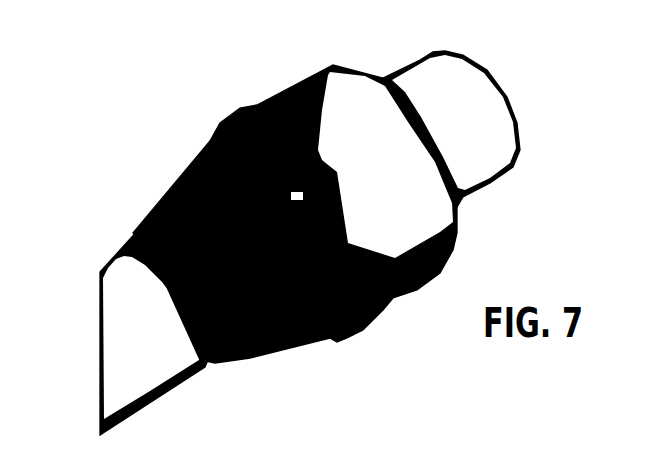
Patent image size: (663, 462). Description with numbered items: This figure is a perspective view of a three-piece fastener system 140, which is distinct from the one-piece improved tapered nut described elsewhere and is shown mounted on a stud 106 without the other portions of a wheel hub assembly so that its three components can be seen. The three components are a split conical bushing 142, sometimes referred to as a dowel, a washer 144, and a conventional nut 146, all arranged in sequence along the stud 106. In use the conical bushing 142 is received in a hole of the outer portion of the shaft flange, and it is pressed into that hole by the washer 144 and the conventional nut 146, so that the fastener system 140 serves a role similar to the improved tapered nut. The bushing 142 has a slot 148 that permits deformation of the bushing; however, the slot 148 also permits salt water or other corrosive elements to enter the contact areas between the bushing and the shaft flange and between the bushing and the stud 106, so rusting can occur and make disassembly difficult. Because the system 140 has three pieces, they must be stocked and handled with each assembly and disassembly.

The stud 106 is at (110, 271).
The fastener system 140 is at (319, 228).
The split conical bushing 142 is at (300, 342).
The washer 144 is at (383, 297).
The conventional nut 146 is at (463, 222).
The slot 148 is at (291, 165).